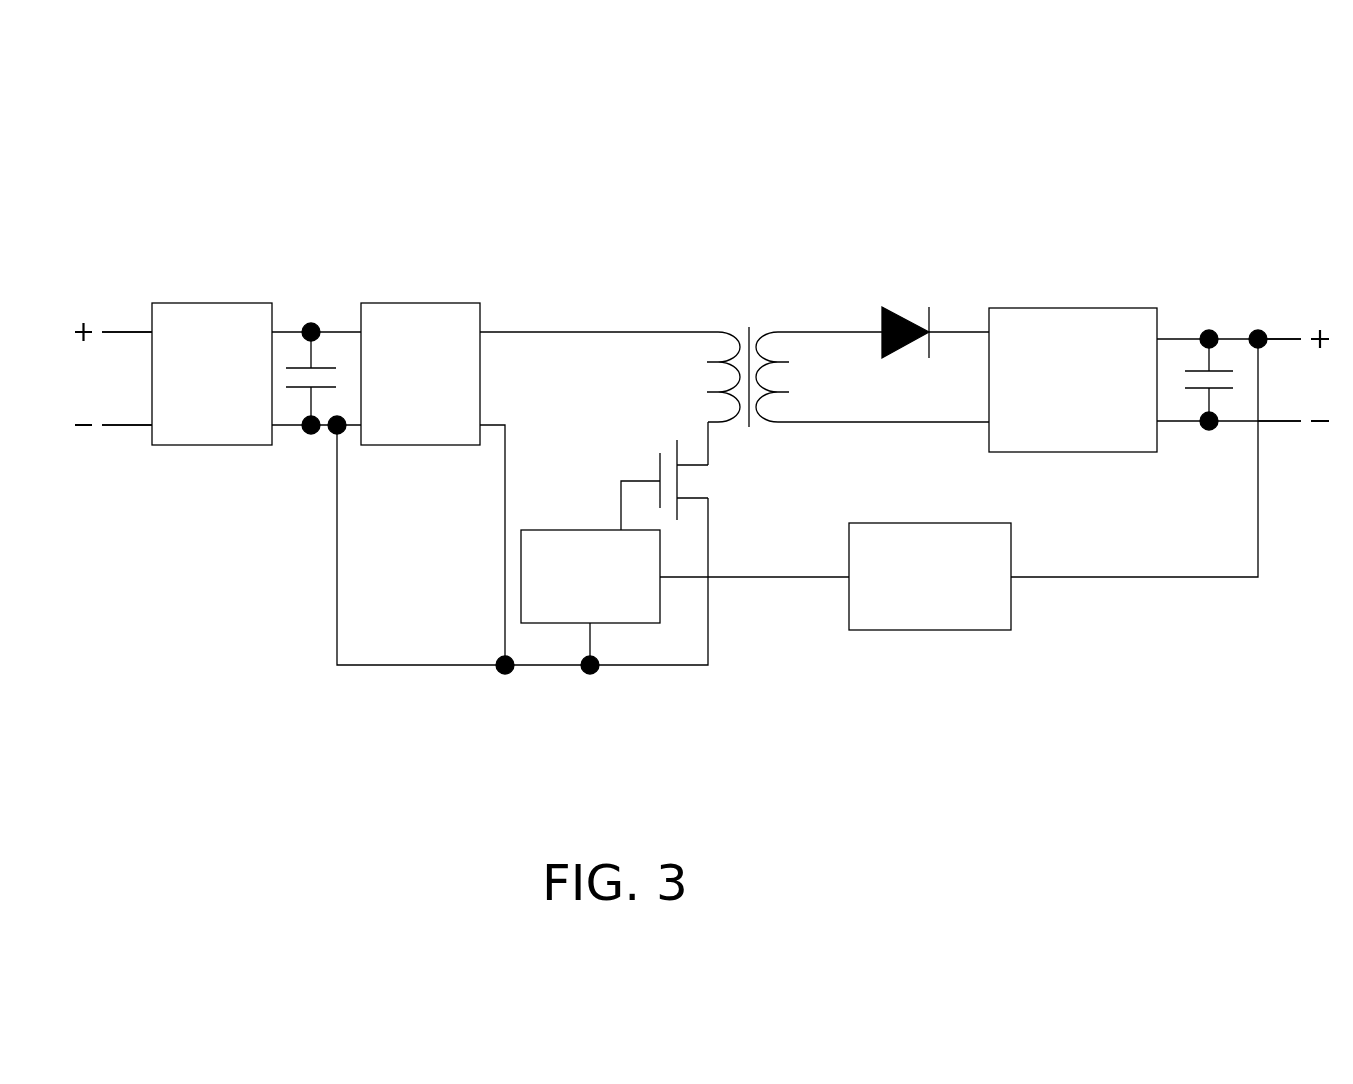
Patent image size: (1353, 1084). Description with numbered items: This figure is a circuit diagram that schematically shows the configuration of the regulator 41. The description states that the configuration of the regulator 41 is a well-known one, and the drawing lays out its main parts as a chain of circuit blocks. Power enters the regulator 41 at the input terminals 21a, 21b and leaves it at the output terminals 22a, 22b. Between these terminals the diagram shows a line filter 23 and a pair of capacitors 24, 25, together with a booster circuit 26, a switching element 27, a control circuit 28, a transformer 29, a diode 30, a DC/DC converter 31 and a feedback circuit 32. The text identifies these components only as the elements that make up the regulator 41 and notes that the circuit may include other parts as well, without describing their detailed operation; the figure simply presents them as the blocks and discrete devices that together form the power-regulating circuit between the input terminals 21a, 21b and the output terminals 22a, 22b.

The input terminal 21a is at (124, 331).
The input terminal 21b is at (124, 425).
The output terminal 22a is at (1285, 339).
The output terminal 22b is at (1285, 421).
The line filter 23 is at (212, 303).
The capacitor 24 is at (326, 368).
The capacitor 25 is at (1221, 371).
The booster circuit 26 is at (437, 303).
The switching element 27 is at (680, 481).
The control circuit 28 is at (538, 530).
The transformer 29 is at (728, 331).
The diode 30 is at (886, 307).
The DC/DC converter 31 is at (1067, 308).
The feedback circuit 32 is at (930, 630).
The regulator 41 is at (1182, 182).